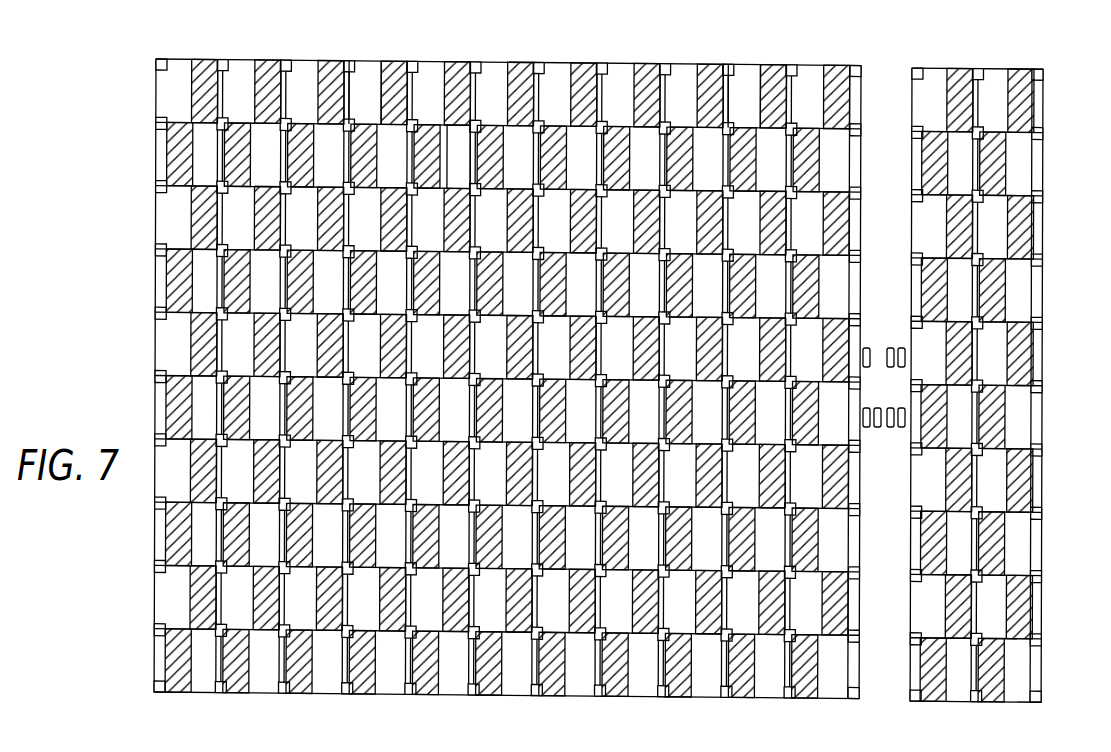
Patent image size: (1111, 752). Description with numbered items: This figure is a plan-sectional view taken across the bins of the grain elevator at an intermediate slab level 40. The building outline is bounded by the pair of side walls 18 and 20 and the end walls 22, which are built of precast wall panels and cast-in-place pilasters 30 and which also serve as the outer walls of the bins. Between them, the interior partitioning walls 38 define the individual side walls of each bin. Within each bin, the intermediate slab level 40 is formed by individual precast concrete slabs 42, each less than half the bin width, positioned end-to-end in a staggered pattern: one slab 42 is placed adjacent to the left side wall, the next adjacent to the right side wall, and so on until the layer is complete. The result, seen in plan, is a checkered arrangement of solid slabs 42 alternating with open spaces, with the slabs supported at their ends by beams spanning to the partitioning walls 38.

The side wall 18 is at (1047, 114).
The side wall 20 is at (155, 107).
The end wall 22 is at (240, 61).
The cast-in-place pilaster 30 is at (608, 120).
The interior partitioning wall 38 is at (355, 88).
The intermediate inclined slab level 40 is at (470, 152).
The precast concrete slab 42 is at (192, 223).